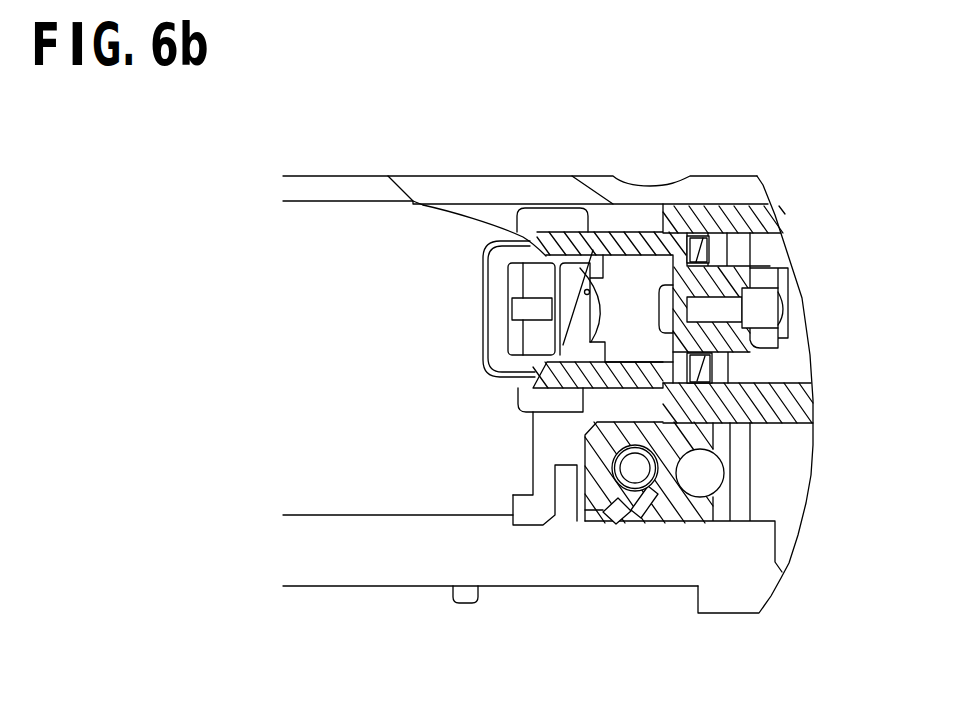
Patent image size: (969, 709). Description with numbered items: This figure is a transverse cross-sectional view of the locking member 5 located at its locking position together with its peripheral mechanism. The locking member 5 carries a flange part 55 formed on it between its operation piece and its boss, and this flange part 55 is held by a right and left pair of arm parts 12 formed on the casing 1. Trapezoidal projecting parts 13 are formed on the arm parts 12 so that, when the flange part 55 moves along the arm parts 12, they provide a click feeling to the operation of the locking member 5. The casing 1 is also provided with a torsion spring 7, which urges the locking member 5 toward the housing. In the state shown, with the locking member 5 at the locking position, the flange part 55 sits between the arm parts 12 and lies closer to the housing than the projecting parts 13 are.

The casing 1 is at (617, 567).
The locking member 5 is at (537, 222).
The torsion spring 7 is at (620, 472).
The arm parts 12 is at (513, 230).
The projecting parts 13 is at (588, 278).
The flange part 55 is at (615, 255).